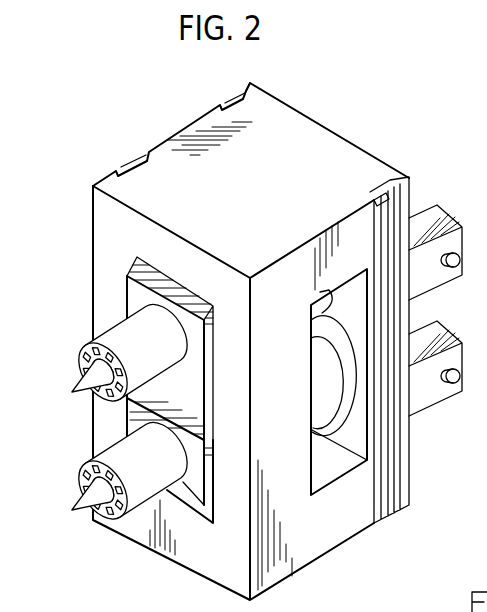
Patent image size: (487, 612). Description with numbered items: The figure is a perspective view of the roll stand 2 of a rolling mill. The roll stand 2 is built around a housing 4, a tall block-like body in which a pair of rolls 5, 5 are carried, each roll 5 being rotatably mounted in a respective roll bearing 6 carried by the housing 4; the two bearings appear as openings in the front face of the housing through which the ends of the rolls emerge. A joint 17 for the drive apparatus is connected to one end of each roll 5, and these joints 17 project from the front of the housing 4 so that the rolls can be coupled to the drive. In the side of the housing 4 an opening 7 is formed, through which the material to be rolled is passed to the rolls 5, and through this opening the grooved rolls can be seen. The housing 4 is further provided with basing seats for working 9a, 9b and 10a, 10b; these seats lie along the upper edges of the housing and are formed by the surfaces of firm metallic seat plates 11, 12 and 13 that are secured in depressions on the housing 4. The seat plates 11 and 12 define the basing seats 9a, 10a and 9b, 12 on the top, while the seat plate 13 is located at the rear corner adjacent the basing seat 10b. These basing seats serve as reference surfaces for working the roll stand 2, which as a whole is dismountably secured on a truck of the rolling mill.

The roll stand 2 is at (334, 132).
The housing 4 is at (350, 152).
The roll 5 is at (323, 297).
The roll bearing 6 is at (132, 297).
The opening 7 is at (352, 441).
The basing seat for working 9a is at (234, 96).
The basing seat for working 9b is at (130, 165).
The basing seat for working 10a is at (221, 99).
The basing seat for working 10b is at (384, 203).
The seat plate 11 is at (228, 104).
The seat plate 12 is at (131, 164).
The seat plate 13 is at (383, 174).
The joint for drive apparatus 17 is at (90, 344).